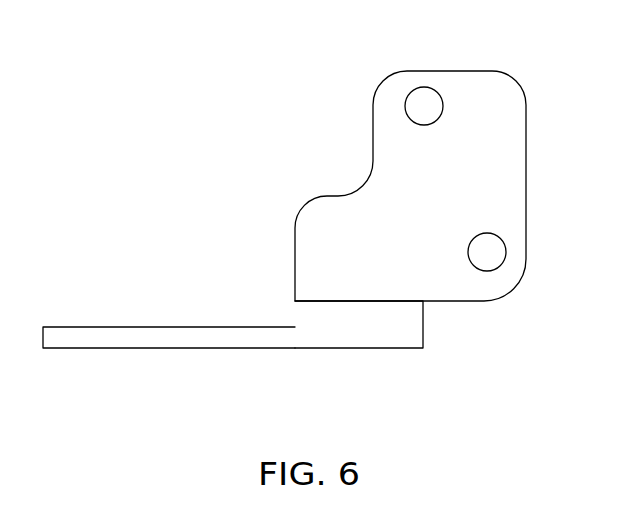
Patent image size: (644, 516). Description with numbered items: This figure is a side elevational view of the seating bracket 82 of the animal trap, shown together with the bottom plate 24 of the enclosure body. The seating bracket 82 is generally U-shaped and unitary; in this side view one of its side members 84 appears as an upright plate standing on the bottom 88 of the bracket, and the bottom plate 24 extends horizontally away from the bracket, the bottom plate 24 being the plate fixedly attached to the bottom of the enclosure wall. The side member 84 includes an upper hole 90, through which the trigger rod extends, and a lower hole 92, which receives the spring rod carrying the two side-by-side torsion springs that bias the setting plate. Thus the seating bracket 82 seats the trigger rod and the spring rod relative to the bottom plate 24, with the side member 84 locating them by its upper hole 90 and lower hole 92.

The bottom plate 24 is at (133, 338).
The seating bracket 82 is at (457, 190).
The side member 84 is at (500, 200).
The bottom 88 is at (408, 326).
The upper hole 90 is at (424, 106).
The lower hole 92 is at (487, 252).